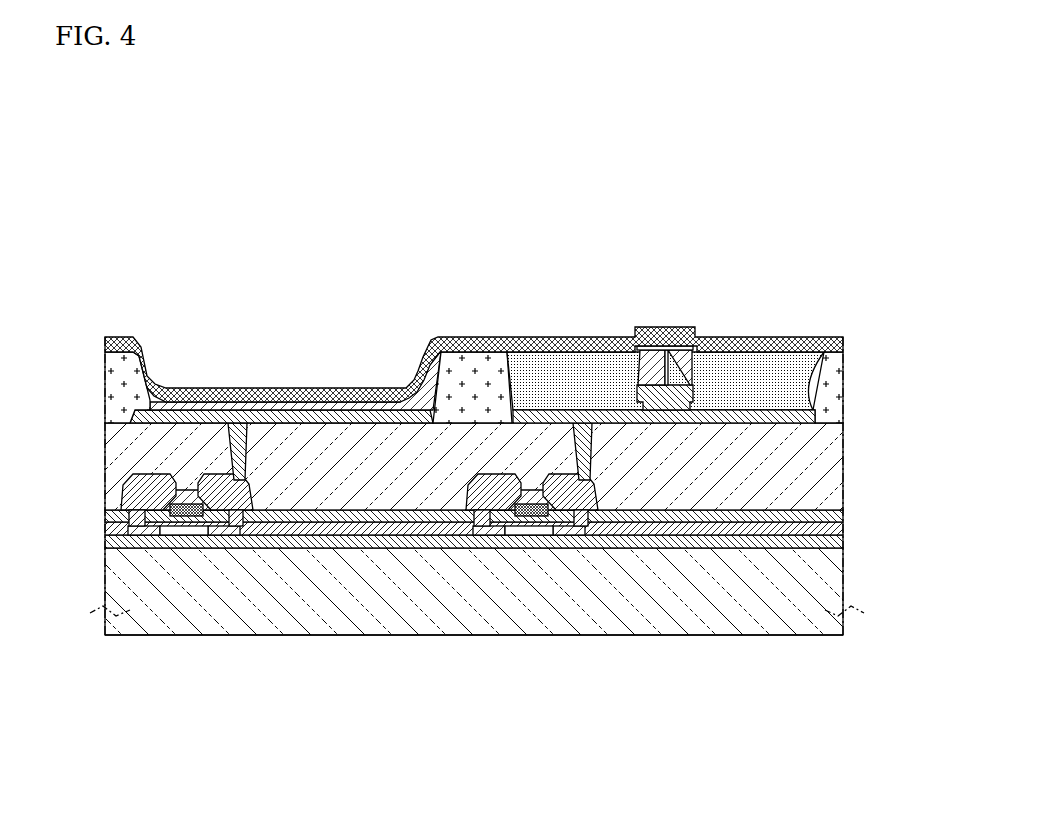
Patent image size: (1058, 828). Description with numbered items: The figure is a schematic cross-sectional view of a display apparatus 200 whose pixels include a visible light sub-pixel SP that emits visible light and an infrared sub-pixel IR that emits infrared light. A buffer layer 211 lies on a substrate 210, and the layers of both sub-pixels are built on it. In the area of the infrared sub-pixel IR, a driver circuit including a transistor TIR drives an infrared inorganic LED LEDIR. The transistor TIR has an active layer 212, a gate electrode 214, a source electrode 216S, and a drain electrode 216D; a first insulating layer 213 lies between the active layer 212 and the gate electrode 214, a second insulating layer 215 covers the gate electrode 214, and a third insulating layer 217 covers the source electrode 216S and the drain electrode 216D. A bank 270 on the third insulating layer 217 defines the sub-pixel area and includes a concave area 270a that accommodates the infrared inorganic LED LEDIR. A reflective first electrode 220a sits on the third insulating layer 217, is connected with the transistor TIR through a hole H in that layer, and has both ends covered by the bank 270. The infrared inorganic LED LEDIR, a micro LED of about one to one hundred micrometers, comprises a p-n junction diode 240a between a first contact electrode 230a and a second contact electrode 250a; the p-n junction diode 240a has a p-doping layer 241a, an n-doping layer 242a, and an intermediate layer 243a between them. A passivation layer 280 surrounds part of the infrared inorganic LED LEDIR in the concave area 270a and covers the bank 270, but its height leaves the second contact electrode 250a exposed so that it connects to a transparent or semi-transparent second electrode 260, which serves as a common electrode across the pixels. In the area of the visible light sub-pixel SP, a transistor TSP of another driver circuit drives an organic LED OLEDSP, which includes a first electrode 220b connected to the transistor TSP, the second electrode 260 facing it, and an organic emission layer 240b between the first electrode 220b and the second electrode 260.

The display apparatus 200 is at (833, 170).
The substrate 210 is at (835, 589).
The buffer layer 211 is at (845, 546).
The active layer 212 is at (541, 537).
The first insulating layer 213 is at (845, 534).
The gate electrode 214 is at (526, 518).
The second insulating layer 215 is at (845, 516).
The source electrode 216S is at (476, 528).
The drain electrode 216D is at (594, 524).
The third insulating layer 217 is at (845, 469).
The first electrode 220a is at (768, 416).
The first electrode 220b is at (327, 416).
The first contact electrode 230a is at (716, 398).
The p-n junction diode 240a is at (664, 290).
The p-doping layer 241a is at (704, 310).
The n-doping layer 242a is at (640, 352).
The intermediate layer 243a is at (666, 350).
The organic emission layer 240b is at (283, 404).
The second contact electrode 250a is at (625, 272).
The second electrode 260 is at (236, 392).
The bank 270 is at (845, 389).
The concave area 270a is at (808, 345).
The passivation layer 280 is at (535, 365).
The hole H is at (582, 395).
The transistor TSP is at (277, 540).
The transistor TIR is at (567, 555).
The infrared inorganic LED LEDIR is at (663, 280).
The organic LED OLEDSP is at (285, 338).
The visible light sub-pixel SP is at (145, 723).
The infrared sub-pixel IR is at (528, 723).